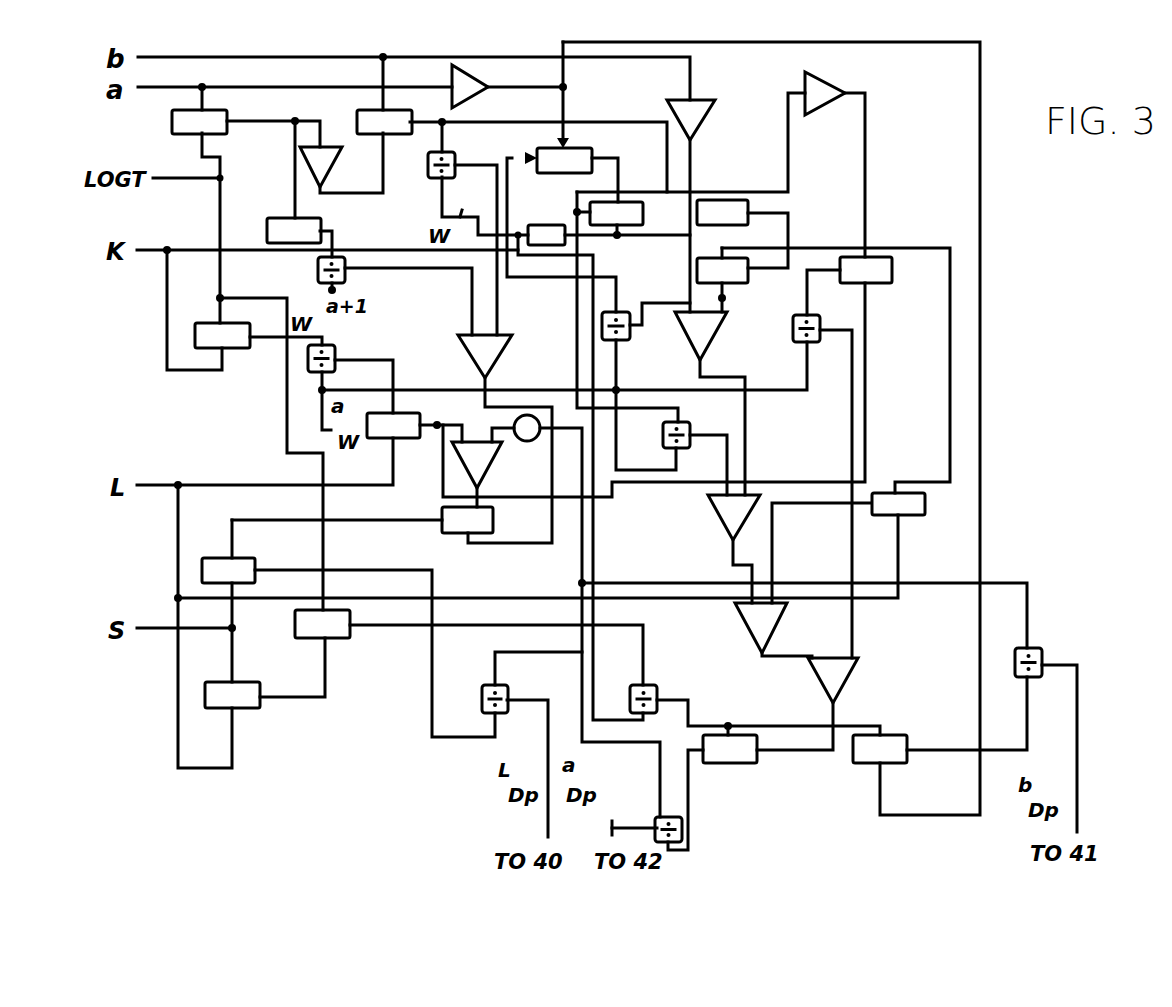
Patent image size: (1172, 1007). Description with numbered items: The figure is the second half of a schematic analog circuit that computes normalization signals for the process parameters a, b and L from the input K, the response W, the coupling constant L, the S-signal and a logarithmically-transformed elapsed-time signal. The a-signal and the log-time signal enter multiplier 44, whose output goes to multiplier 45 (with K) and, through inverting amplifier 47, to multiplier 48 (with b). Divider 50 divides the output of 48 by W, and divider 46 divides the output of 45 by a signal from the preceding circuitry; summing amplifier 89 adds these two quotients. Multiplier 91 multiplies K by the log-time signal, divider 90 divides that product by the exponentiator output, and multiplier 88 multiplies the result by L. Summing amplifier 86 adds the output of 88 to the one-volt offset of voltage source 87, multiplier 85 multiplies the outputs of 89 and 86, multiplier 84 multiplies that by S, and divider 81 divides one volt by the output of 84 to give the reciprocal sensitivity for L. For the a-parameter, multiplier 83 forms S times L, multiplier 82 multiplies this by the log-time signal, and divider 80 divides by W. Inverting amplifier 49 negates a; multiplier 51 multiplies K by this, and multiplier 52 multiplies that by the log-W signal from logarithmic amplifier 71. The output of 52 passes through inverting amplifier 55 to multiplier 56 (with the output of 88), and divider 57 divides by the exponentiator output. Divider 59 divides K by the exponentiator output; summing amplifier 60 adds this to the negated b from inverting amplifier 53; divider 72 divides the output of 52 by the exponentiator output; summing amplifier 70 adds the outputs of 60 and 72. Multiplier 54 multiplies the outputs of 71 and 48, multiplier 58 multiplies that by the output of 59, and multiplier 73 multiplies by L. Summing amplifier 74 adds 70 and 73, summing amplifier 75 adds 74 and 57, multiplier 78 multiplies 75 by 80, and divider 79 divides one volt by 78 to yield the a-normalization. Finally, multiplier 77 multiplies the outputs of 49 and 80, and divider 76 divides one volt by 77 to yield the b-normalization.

The multiplier 44 is at (240, 103).
The multiplier 45 is at (272, 218).
The divider 46 is at (318, 268).
The inverting amplifier 47 is at (340, 165).
The multiplier 48 is at (357, 112).
The inverting amplifier 49 is at (465, 103).
The divider 50 is at (455, 160).
The multiplier 51 is at (592, 152).
The multiplier 52 is at (643, 215).
The inverting amplifier 53 is at (704, 120).
The multiplier 54 is at (738, 226).
The inverting amplifier 55 is at (830, 98).
The multiplier 56 is at (892, 270).
The divider 57 is at (818, 318).
The multiplier 58 is at (735, 288).
The divider 59 is at (622, 312).
The summing amplifier 60 is at (722, 340).
The summing amplifier 70 is at (708, 500).
The logarithmic amplifier 71 is at (561, 226).
The divider 72 is at (690, 424).
The multiplier 73 is at (925, 512).
The summing amplifier 74 is at (772, 640).
The summing amplifier 75 is at (810, 683).
The divider 76 is at (1015, 648).
The multiplier 77 is at (895, 735).
The multiplier 78 is at (722, 766).
The divider 79 is at (657, 818).
The divider 80 is at (652, 688).
The divider 81 is at (482, 692).
The multiplier 82 is at (330, 640).
The multiplier 83 is at (245, 710).
The multiplier 84 is at (218, 558).
The multiplier 85 is at (493, 522).
The summing amplifier 86 is at (480, 470).
The voltage source 87 is at (527, 441).
The multiplier 88 is at (400, 441).
The summing amplifier 89 is at (507, 336).
The divider 90 is at (335, 350).
The multiplier 91 is at (258, 315).